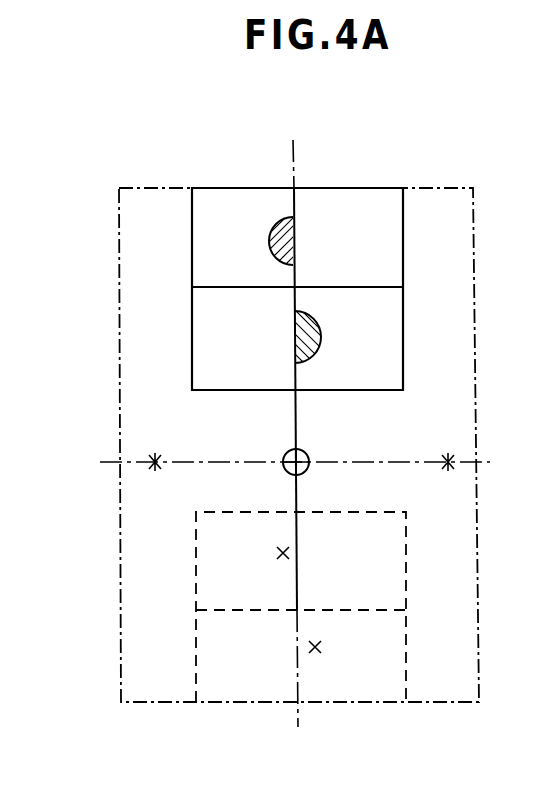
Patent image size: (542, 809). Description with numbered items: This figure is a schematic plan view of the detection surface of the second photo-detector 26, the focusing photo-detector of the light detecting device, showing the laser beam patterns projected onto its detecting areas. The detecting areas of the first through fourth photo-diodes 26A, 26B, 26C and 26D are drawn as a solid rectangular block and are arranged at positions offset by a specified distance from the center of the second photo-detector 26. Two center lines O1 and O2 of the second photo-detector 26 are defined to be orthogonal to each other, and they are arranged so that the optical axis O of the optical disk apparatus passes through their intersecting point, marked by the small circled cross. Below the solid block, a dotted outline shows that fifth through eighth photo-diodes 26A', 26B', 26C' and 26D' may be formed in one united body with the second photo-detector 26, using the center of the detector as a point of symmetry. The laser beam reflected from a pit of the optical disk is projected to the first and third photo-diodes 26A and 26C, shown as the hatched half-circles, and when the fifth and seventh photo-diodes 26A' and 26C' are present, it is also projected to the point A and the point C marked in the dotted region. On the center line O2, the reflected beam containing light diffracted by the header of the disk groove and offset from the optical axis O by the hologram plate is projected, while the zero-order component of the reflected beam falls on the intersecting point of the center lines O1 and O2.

The second photo-detector 26 is at (392, 190).
The first photo-diode 26A is at (255, 198).
The second photo-diode 26B is at (348, 199).
The third photo-diode 26C is at (373, 372).
The fourth photo-diode 26D is at (228, 363).
The fifth photo-diode 26A' is at (301, 639).
The sixth photo-diode 26B' is at (356, 688).
The seventh photo-diode 26C' is at (388, 564).
The eighth photo-diode 26D' is at (214, 577).
The optical axis O is at (303, 448).
The center line O1 is at (298, 584).
The center line O2 is at (393, 464).
The point A is at (318, 647).
The point C is at (283, 553).